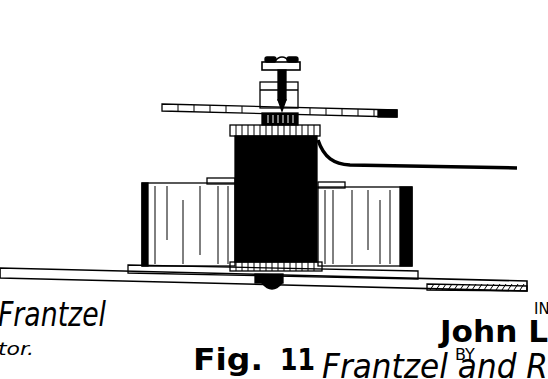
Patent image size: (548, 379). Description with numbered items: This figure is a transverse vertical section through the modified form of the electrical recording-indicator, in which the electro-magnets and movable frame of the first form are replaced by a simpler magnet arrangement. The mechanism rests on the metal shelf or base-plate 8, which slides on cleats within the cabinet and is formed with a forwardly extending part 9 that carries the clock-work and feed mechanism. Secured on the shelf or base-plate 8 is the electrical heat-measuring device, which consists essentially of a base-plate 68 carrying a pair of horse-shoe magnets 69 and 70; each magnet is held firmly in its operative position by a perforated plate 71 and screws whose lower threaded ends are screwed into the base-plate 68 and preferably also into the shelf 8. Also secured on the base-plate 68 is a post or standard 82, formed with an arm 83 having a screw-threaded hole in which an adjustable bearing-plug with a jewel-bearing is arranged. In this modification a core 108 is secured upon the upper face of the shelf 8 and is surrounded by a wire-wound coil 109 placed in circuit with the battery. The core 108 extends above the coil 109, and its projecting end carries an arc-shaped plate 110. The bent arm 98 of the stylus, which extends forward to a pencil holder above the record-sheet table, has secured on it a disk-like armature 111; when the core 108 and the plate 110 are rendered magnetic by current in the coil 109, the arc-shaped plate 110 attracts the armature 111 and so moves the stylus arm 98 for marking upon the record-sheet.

The shelf or base-plate 8 is at (57, 274).
The forwardly extending part of the base-plate 9 is at (477, 274).
The base-plate of the heat-measuring device 68 is at (428, 273).
The horse-shoe magnet 69 is at (142, 184).
The horse-shoe magnet 70 is at (400, 187).
The perforated plate 71 is at (345, 186).
The post or standard 82 is at (290, 99).
The arm of the post 83 is at (262, 84).
The arm of the stylus 98 is at (284, 56).
The core 108 is at (260, 119).
The wire-wound coil 109 is at (234, 157).
The arc-shaped plate 110 is at (359, 112).
The armature 111 is at (300, 67).